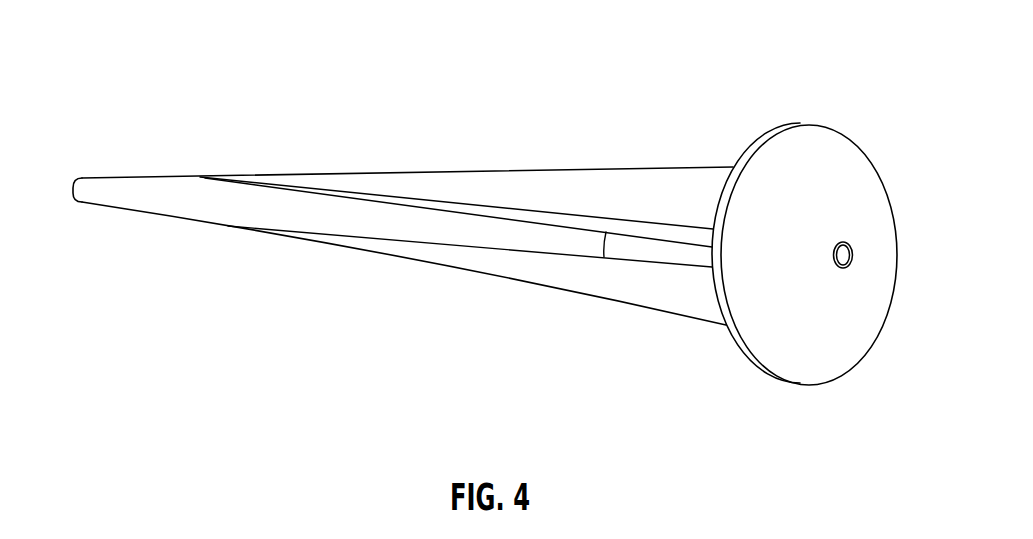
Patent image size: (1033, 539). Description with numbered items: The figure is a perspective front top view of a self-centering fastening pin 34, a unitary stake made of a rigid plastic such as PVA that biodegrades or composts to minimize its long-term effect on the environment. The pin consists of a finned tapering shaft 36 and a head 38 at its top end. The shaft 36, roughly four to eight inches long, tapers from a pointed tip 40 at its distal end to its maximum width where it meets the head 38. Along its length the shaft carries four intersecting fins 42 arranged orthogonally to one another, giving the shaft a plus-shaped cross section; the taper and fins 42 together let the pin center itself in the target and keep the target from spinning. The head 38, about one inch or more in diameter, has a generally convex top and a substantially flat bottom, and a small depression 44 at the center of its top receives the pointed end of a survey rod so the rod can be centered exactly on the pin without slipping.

The self-centering fastening pin 34 is at (713, 35).
The finned tapering shaft 36 is at (337, 173).
The head 38 is at (822, 337).
The tip 40 is at (72, 190).
The fins 42 is at (631, 183).
The small depression 44 is at (853, 257).